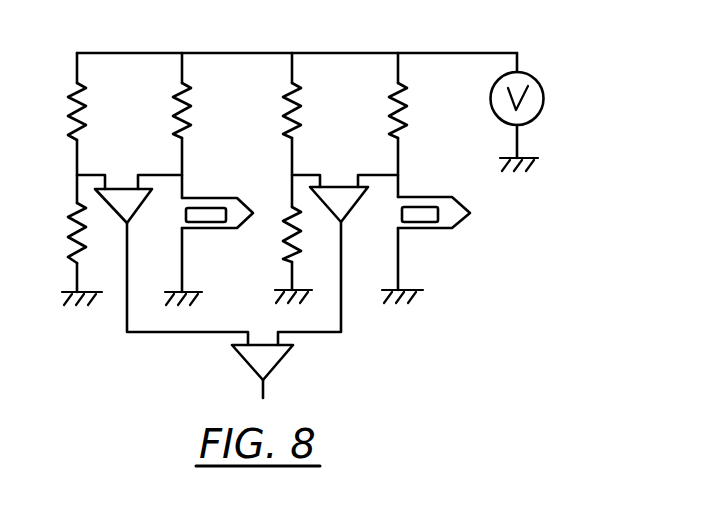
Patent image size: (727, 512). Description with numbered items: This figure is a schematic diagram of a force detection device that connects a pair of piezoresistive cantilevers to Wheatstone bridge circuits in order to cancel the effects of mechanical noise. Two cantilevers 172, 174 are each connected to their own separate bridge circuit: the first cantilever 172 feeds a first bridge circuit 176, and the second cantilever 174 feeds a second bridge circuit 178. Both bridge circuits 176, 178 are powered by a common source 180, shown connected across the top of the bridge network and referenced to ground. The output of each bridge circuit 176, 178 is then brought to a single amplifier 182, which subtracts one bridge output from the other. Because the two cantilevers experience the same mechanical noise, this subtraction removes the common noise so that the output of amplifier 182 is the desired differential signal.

The cantilever 172 is at (220, 197).
The cantilever 174 is at (433, 193).
The bridge circuit 176 is at (146, 207).
The bridge circuit 178 is at (360, 207).
The source 180 is at (539, 79).
The amplifier 182 is at (285, 357).